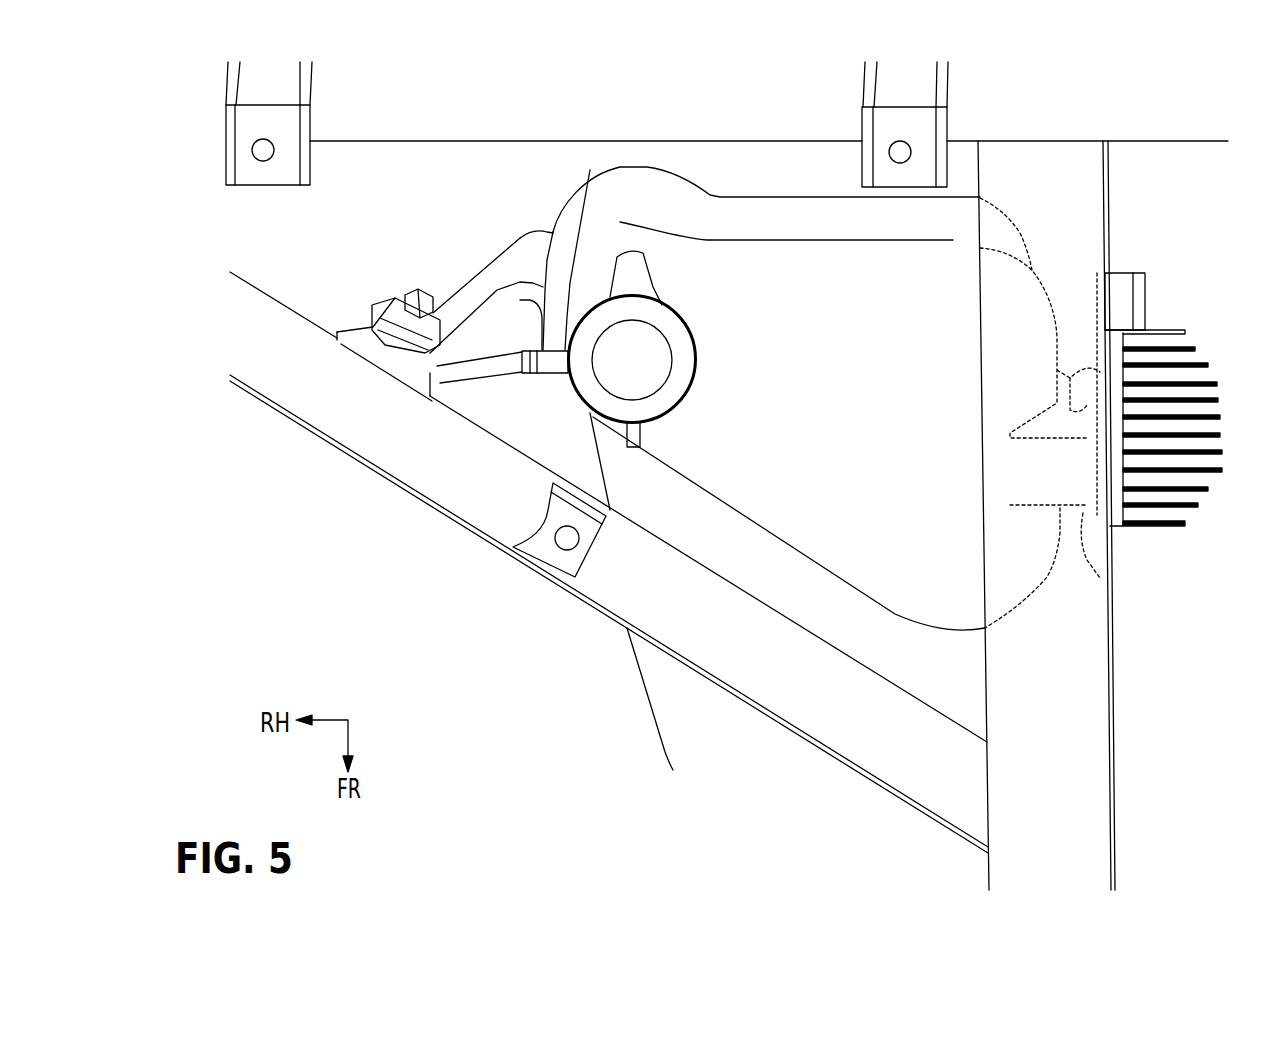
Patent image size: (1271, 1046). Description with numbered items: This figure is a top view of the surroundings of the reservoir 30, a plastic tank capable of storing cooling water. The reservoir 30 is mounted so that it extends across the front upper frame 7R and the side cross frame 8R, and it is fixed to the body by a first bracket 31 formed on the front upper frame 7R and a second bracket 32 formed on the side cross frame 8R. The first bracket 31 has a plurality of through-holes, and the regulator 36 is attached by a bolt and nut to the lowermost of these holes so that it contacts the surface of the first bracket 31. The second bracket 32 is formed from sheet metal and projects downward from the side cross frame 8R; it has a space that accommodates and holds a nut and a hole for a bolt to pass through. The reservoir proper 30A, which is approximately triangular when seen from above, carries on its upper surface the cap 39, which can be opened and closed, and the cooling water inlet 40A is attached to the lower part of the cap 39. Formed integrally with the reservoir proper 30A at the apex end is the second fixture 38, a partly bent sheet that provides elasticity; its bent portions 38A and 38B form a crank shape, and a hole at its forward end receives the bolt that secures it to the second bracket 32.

The reservoir 30 is at (940, 253).
The reservoir proper 30A is at (827, 297).
The first bracket 31 is at (1100, 578).
The second bracket 32 is at (397, 363).
The regulator 36 is at (1163, 527).
The second fixture 38 is at (483, 287).
The bent portion 38A is at (530, 242).
The bent portion 38B is at (433, 393).
The cap 39 is at (680, 357).
The cooling water inlet 40A is at (590, 170).
The front upper frame 7R is at (1090, 738).
The side cross frame 8R is at (607, 585).